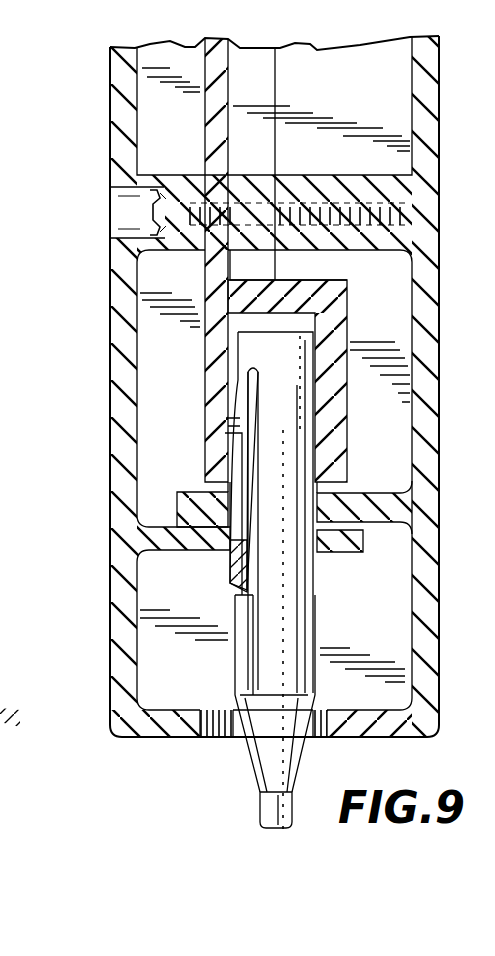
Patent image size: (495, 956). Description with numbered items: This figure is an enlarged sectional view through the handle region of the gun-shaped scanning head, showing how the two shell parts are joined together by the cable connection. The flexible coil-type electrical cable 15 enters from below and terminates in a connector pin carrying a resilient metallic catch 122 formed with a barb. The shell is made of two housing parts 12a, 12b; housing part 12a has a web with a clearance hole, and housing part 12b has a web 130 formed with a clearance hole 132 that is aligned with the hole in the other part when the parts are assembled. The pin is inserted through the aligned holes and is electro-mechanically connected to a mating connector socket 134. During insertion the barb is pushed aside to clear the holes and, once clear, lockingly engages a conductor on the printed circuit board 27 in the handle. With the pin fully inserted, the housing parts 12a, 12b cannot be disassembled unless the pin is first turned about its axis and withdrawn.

The housing part 12a is at (427, 480).
The housing part 12b is at (115, 500).
The printed circuit board 27 is at (206, 367).
The mating connector socket 134 is at (333, 393).
The clearance hole 132 is at (212, 566).
The web 130 is at (215, 599).
The resilient metallic catch 122 is at (230, 585).
The electrical cable 15 is at (262, 812).